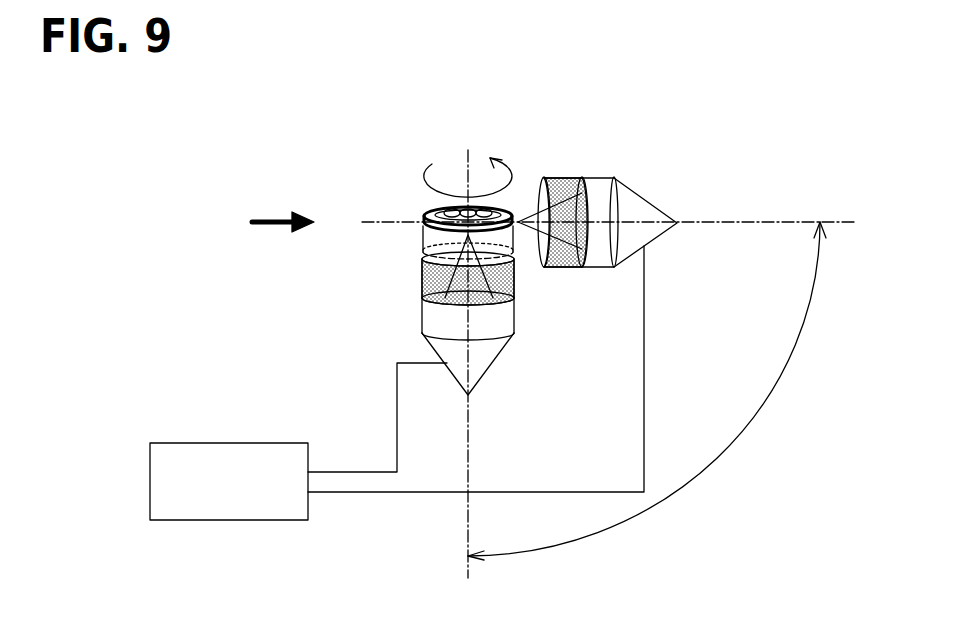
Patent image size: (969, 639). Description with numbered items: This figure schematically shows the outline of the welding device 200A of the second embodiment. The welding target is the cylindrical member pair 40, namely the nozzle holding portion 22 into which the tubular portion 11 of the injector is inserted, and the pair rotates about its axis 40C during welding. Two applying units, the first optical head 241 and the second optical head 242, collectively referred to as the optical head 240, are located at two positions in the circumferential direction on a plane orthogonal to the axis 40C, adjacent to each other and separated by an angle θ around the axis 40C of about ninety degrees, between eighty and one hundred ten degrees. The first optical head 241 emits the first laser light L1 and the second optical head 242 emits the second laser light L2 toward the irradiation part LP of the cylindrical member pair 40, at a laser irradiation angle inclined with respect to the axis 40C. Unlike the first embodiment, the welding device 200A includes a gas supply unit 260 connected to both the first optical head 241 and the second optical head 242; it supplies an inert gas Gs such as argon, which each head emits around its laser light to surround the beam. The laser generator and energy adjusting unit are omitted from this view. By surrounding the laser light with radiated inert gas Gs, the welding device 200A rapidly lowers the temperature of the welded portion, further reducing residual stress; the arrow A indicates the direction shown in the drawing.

The cylindrical member pair 40 is at (339, 145).
The axis of the cylindrical member pair 40C is at (468, 162).
The tubular portion 11 is at (434, 205).
The nozzle holding portion 22 is at (430, 238).
The welding device 200A is at (246, 305).
The gas supply unit 260 is at (183, 443).
The optical head 240 is at (705, 258).
The first optical head 241 is at (633, 212).
The second optical head 242 is at (480, 352).
The first laser light L1 is at (545, 266).
The second laser light L2 is at (423, 260).
The irradiation part LP is at (518, 220).
The gas Gs is at (424, 286).
The feed direction A is at (271, 226).